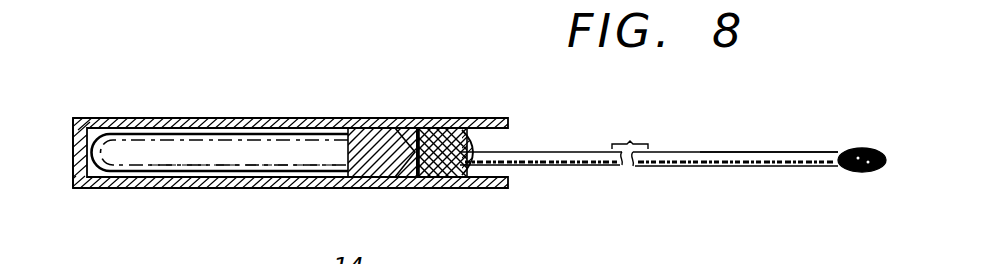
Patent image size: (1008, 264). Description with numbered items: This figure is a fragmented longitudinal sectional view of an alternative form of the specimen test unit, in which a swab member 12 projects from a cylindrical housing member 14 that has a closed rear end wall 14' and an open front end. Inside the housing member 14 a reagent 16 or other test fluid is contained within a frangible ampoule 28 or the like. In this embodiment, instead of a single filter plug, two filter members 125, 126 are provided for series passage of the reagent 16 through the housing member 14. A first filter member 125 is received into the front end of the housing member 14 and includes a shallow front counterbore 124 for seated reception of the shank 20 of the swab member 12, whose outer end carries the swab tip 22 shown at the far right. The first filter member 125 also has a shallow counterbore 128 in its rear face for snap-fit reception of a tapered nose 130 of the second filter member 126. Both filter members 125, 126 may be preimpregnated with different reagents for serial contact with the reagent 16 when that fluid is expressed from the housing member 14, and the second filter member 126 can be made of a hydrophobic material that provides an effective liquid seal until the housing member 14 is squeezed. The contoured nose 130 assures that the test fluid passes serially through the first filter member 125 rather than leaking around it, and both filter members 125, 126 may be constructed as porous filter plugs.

The swab member 12 is at (726, 146).
The housing member 14 is at (288, 100).
The closed rear end wall 14' is at (92, 119).
The reagent 16 is at (175, 150).
The swab shank 20 is at (813, 151).
The tip 22 is at (861, 148).
The frangible ampoule 28 is at (262, 162).
The shallow front counterbore 124 is at (505, 152).
The first filter member 125 is at (458, 128).
The second filter member 126 is at (375, 130).
The shallow counterbore in rear face 128 is at (430, 128).
The tapered nose 130 is at (440, 162).